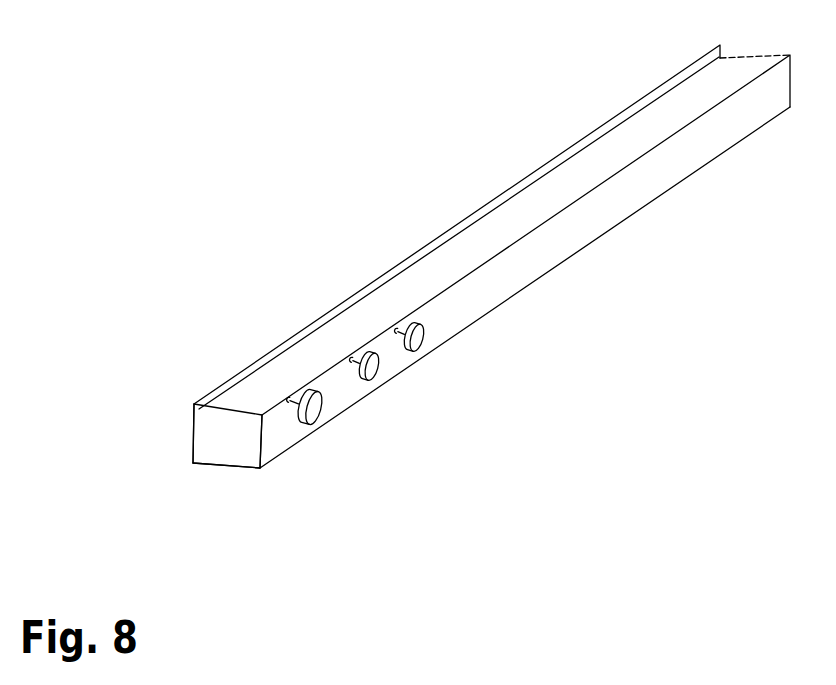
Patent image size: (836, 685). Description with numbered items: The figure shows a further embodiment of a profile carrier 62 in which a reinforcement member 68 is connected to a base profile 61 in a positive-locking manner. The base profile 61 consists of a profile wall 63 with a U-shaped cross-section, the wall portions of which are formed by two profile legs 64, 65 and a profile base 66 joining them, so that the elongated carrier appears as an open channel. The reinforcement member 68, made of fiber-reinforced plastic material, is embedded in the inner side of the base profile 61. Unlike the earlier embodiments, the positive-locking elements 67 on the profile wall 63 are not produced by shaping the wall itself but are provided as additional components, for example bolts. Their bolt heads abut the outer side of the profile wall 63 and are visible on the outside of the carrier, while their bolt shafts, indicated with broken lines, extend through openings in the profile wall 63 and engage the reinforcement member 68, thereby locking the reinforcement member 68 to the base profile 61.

The base profile 61 is at (427, 238).
The profile carrier 62 is at (508, 182).
The profile wall 63 is at (615, 208).
The profile leg 64 is at (277, 433).
The profile leg 65 is at (188, 435).
The profile base 66 is at (215, 467).
The positive-locking element 67 is at (427, 345).
The reinforcement member 68 is at (227, 445).